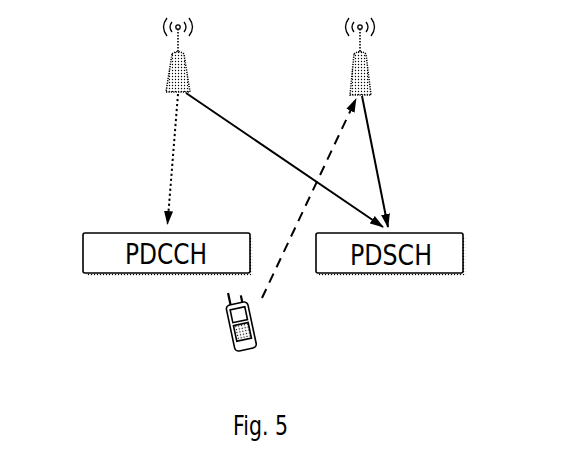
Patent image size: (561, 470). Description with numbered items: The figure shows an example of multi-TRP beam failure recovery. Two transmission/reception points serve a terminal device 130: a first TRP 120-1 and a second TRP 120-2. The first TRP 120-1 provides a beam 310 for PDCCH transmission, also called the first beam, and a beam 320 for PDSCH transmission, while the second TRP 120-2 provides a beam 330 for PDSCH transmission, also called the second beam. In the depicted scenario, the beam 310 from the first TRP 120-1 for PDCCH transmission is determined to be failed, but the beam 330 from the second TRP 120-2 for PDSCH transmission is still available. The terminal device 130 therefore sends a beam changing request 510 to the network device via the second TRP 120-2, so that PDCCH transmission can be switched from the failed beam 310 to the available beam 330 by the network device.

The first TRP 120-1 is at (180, 68).
The second TRP 120-2 is at (360, 75).
The terminal device 130 is at (248, 340).
The beam for PDCCH transmission 310 is at (172, 158).
The beam for PDSCH transmission 320 is at (237, 128).
The beam for PDSCH transmission 330 is at (375, 145).
The beam changing request 510 is at (305, 204).